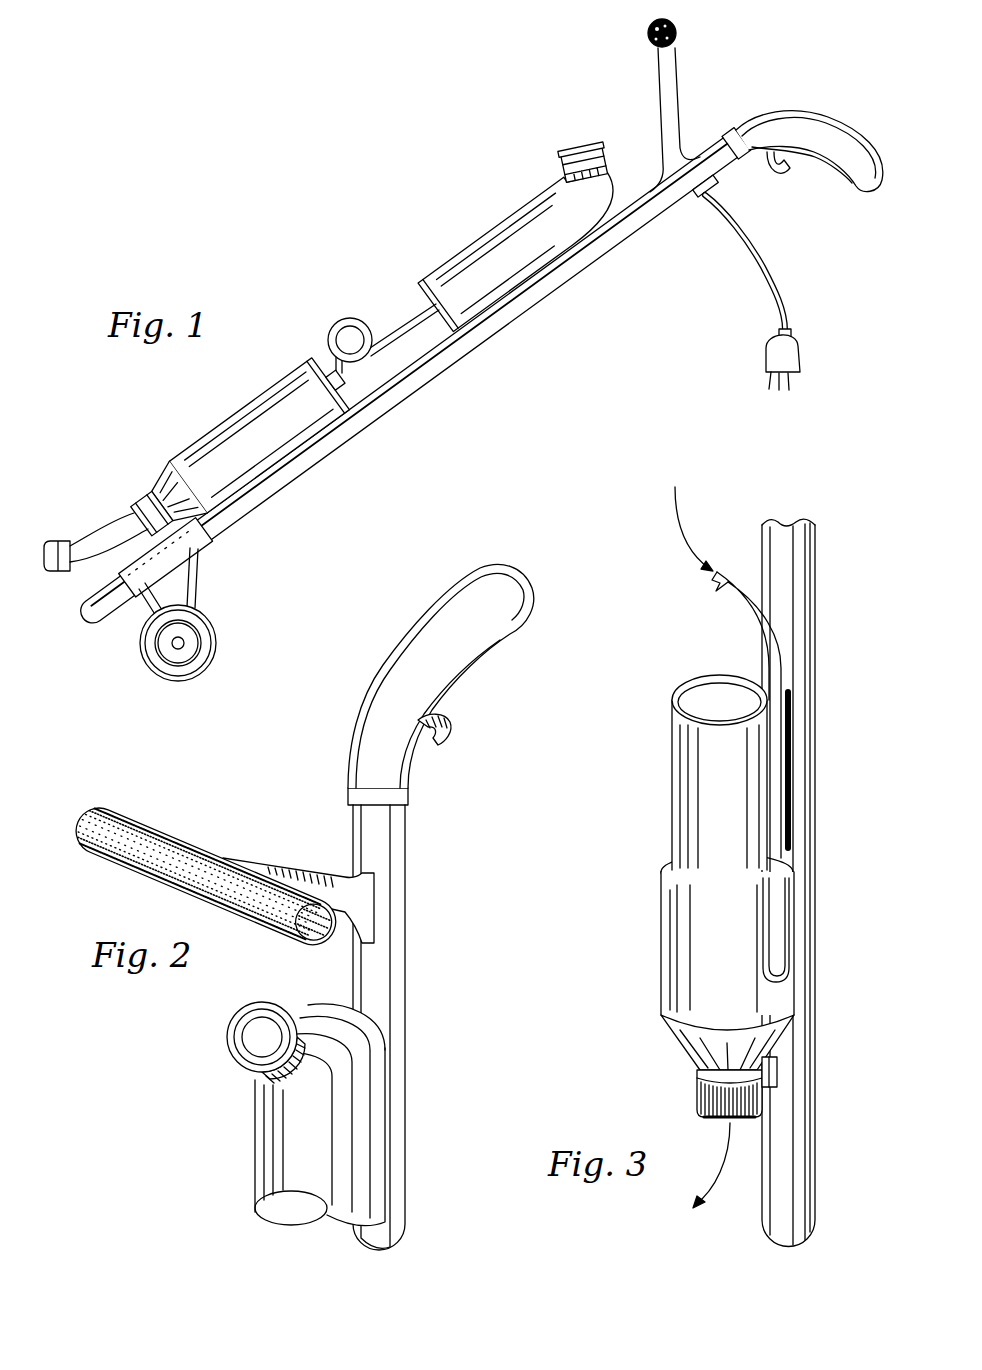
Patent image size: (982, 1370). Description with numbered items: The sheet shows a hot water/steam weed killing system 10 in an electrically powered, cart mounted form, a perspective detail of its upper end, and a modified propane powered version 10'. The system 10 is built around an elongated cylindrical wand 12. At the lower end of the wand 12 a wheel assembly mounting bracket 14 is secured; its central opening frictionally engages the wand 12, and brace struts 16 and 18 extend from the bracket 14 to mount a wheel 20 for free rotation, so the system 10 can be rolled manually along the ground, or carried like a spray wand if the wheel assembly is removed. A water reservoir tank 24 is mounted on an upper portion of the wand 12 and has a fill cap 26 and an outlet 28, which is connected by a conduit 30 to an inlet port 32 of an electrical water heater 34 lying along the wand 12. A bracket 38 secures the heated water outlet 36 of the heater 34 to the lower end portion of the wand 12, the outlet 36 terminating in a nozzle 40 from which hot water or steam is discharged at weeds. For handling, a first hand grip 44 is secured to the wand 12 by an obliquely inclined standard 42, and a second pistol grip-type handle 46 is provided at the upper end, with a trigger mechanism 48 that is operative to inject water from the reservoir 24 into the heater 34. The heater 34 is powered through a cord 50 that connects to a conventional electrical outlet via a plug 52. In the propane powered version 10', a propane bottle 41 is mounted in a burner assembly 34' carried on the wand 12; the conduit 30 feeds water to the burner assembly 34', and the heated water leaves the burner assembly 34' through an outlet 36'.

In FIG. 1, the weed killing system 10 is at (336, 188).
In FIG. 2, the weed killing system 10 is at (118, 1081).
In FIG. 3, the propane powered version of the weed killing system 10' is at (556, 859).
In FIG. 1, the elongated cylindrical wand 12 is at (521, 318).
In FIG. 2, the elongated cylindrical wand 12 is at (405, 978).
In FIG. 3, the elongated cylindrical wand 12 is at (808, 600).
In FIG. 1, the wheel assembly mounting bracket 14 is at (218, 557).
In FIG. 1, the brace strut 16 is at (205, 590).
In FIG. 1, the brace strut 18 is at (142, 614).
In FIG. 1, the wheel 20 is at (210, 658).
In FIG. 1, the water reservoir tank 24 is at (482, 238).
In FIG. 2, the water reservoir tank 24 is at (270, 1135).
In FIG. 1, the fill cap 26 is at (572, 150).
In FIG. 2, the fill cap 26 is at (226, 1030).
In FIG. 1, the outlet 28 is at (396, 303).
In FIG. 1, the conduit 30 is at (336, 326).
In FIG. 3, the conduit 30 is at (756, 627).
In FIG. 1, the inlet port 32 is at (310, 348).
In FIG. 1, the electrical water heater 34 is at (259, 435).
In FIG. 3, the burner assembly 34' is at (694, 971).
In FIG. 1, the heated water outlet 36 is at (122, 506).
In FIG. 3, the outlet 36' is at (697, 1132).
In FIG. 1, the bracket 38 is at (148, 492).
In FIG. 1, the nozzle 40 is at (62, 576).
In FIG. 3, the propane bottle 41 is at (690, 775).
In FIG. 1, the obliquely inclined standard 42 is at (684, 96).
In FIG. 2, the obliquely inclined standard 42 is at (277, 867).
In FIG. 1, the first hand grip 44 is at (683, 36).
In FIG. 2, the first hand grip 44 is at (150, 828).
In FIG. 1, the pistol grip-type handle 46 is at (800, 108).
In FIG. 2, the pistol grip-type handle 46 is at (463, 662).
In FIG. 1, the trigger mechanism 48 is at (788, 175).
In FIG. 2, the trigger mechanism 48 is at (440, 745).
In FIG. 1, the cord 50 is at (752, 265).
In FIG. 1, the plug 52 is at (766, 346).